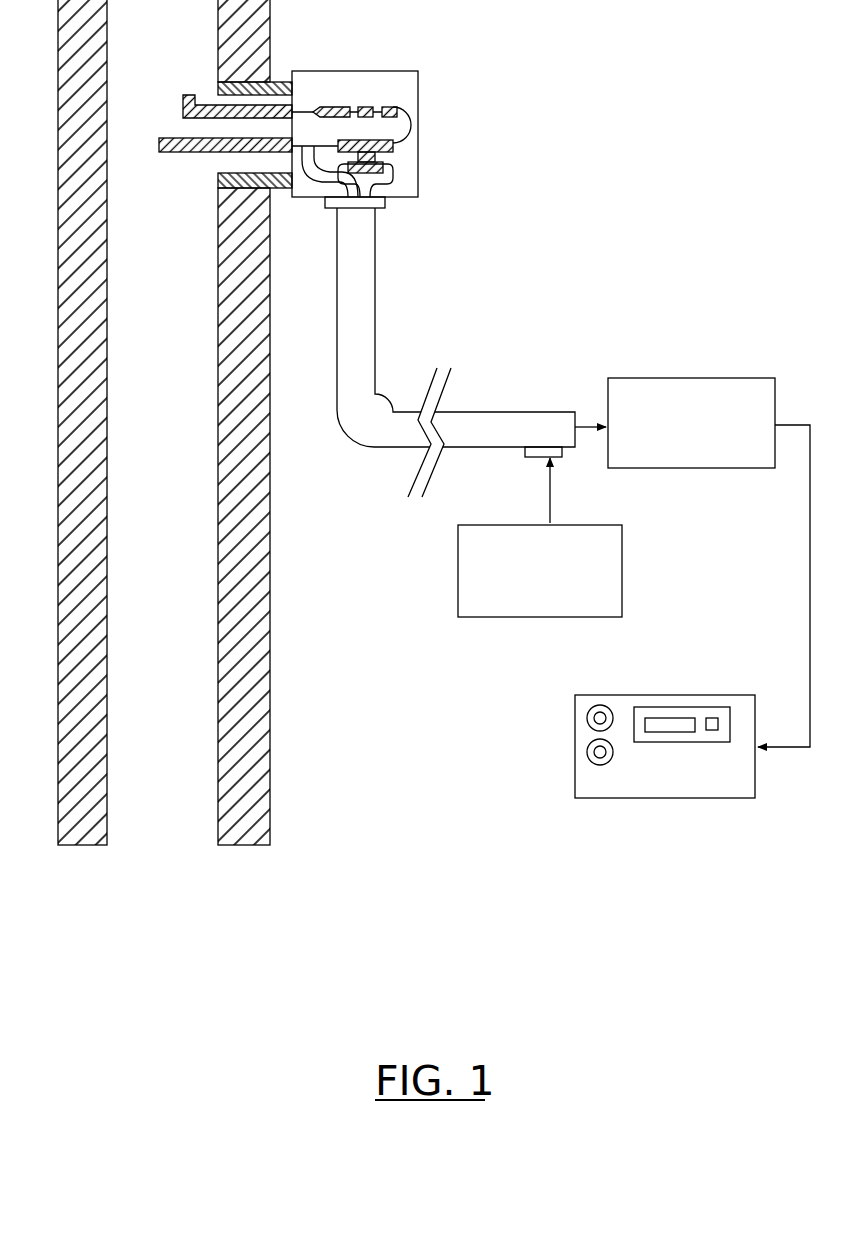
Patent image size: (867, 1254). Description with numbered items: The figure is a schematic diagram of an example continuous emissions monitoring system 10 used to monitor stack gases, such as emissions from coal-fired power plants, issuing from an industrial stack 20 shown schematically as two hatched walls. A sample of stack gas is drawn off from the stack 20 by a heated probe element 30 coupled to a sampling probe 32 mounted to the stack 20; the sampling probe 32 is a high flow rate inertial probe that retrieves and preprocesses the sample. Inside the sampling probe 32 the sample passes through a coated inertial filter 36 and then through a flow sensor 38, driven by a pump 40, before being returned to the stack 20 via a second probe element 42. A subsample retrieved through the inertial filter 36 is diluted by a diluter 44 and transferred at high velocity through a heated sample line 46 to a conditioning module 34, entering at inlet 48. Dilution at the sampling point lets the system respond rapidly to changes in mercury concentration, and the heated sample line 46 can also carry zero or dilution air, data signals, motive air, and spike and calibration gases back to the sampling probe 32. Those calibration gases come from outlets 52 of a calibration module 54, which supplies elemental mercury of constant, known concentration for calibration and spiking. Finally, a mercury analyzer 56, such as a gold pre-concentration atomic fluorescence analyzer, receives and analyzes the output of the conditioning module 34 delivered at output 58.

The continuous emissions monitoring system 10 is at (579, 165).
The stack 20 is at (178, 538).
The heated probe element 30 is at (203, 152).
The sampling probe 32 is at (395, 101).
The conditioning module 34 is at (708, 427).
The coated inertial filter 36 is at (395, 147).
The flow sensor 38 is at (392, 106).
The pump 40 is at (335, 107).
The probe element 42 is at (204, 103).
The diluter 44 is at (385, 166).
The heated sample line 46 is at (355, 270).
The conditioning module inlet 48 is at (597, 421).
The outlets 52 is at (550, 503).
The calibration module 54 is at (554, 584).
The mercury analyzer 56 is at (695, 782).
The conditioning module output 58 is at (810, 580).